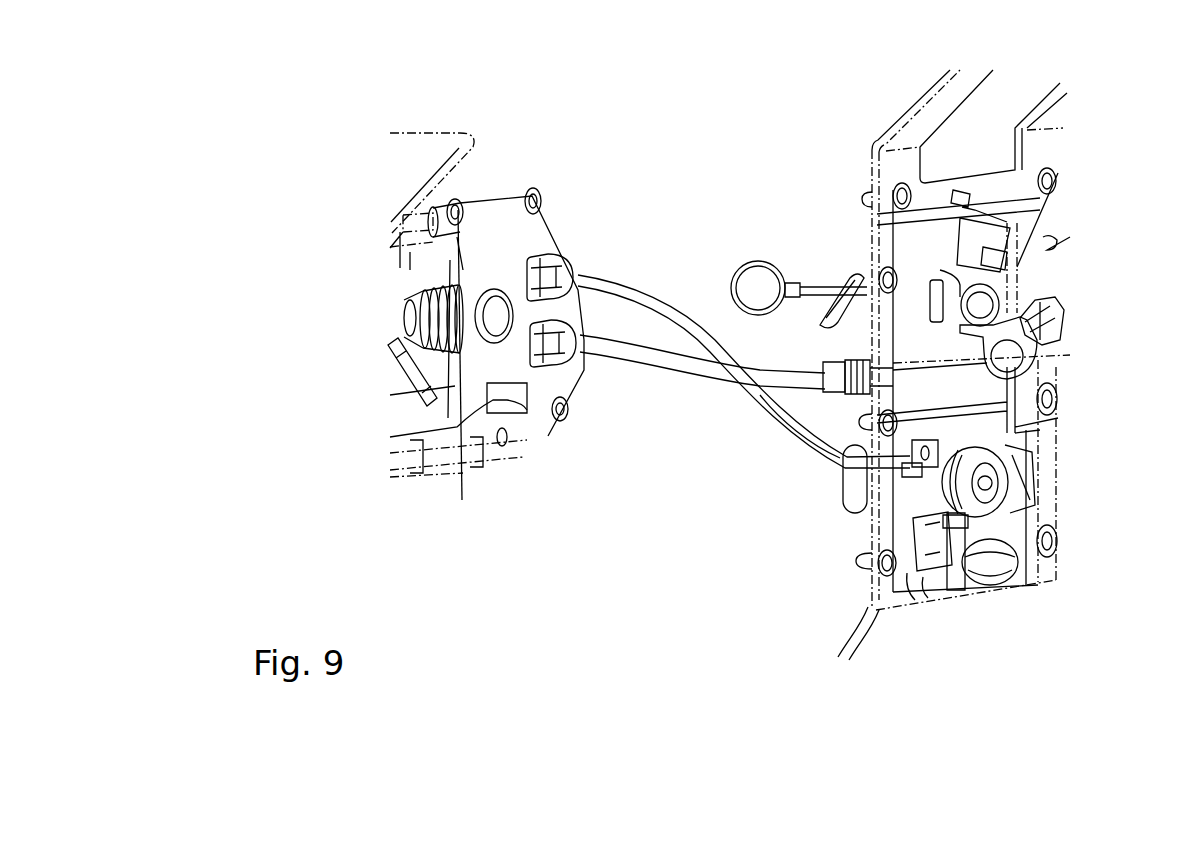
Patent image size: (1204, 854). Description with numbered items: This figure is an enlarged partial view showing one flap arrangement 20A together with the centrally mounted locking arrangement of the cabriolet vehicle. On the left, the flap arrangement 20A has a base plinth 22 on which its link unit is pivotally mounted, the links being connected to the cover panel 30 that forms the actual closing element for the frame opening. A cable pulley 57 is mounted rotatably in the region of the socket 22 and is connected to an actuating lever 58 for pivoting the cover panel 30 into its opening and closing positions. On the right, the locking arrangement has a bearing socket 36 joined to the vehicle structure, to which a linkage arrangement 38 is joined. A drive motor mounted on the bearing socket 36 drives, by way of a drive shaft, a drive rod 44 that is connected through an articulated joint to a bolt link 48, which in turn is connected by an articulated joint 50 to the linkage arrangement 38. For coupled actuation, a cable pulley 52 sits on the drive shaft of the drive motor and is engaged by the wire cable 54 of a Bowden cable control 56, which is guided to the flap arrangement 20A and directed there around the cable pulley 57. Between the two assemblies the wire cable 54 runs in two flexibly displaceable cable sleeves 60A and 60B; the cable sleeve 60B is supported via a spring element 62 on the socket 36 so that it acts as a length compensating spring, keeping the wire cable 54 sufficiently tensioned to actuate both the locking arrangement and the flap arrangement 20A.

The cover panel 30 is at (412, 158).
The flap arrangement 20A is at (492, 190).
The base plinth 22 is at (562, 383).
The cable pulley 57 is at (455, 378).
The actuating lever 58 is at (393, 357).
The cable sleeve 60A is at (652, 347).
The cable sleeve 60B is at (650, 297).
The spring element 62 is at (845, 362).
The wire cable 54 is at (930, 363).
The bearing socket 36 is at (1047, 577).
The linkage arrangement 38 is at (1020, 316).
The articulated joint 50 is at (1028, 358).
The cable pulley 52 is at (945, 490).
The bolt link 48 is at (1012, 517).
The drive rod 44 is at (962, 590).
The Bowden cable control 56 is at (791, 434).